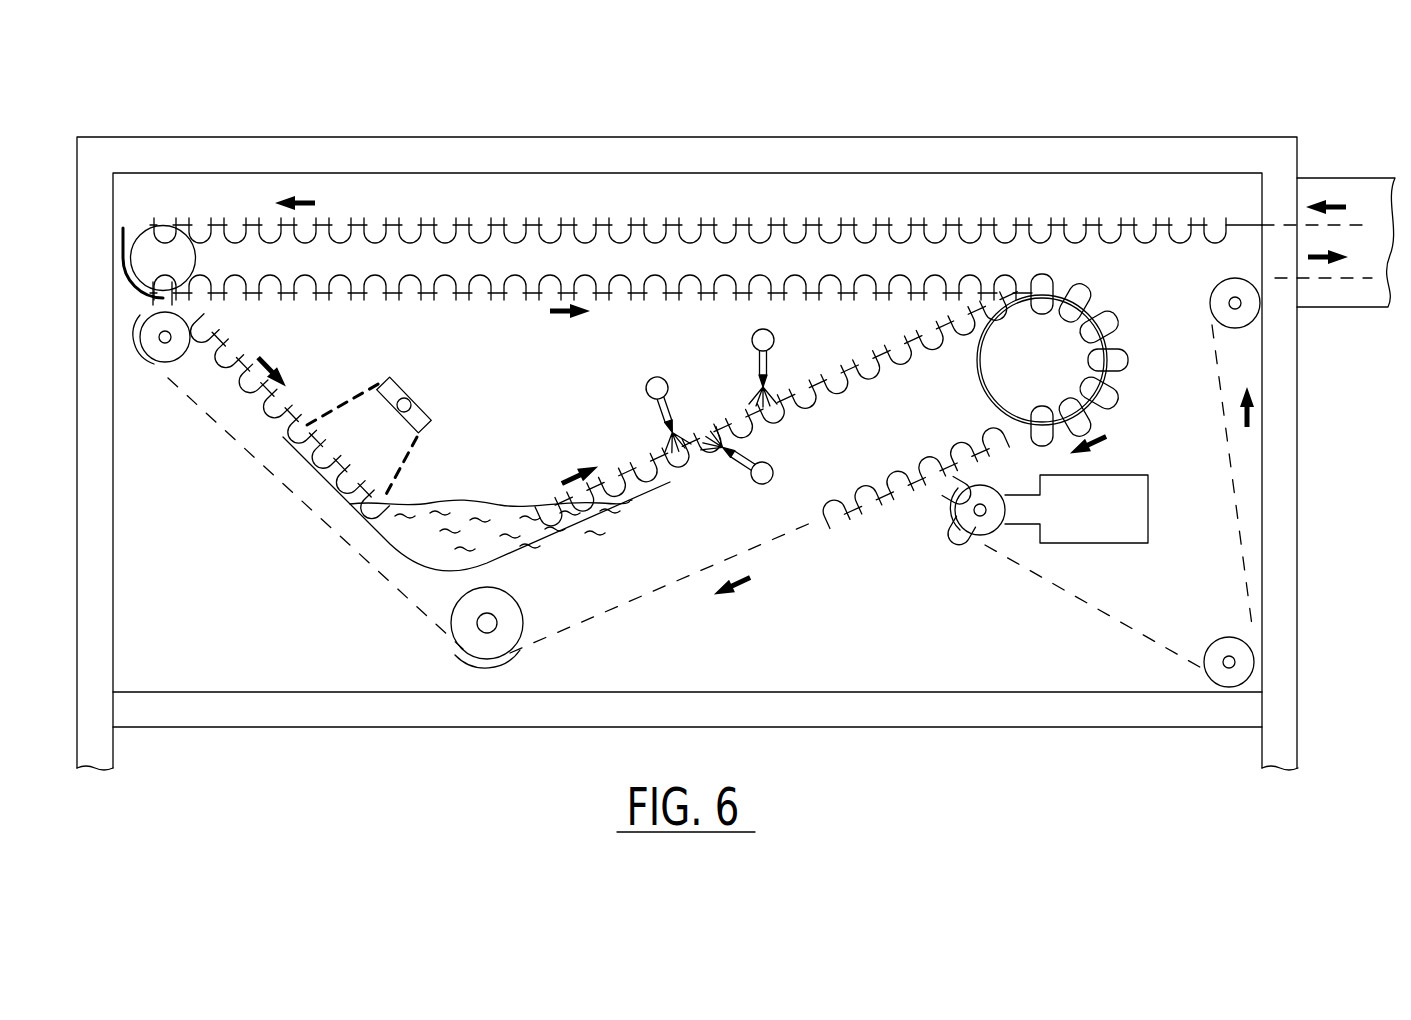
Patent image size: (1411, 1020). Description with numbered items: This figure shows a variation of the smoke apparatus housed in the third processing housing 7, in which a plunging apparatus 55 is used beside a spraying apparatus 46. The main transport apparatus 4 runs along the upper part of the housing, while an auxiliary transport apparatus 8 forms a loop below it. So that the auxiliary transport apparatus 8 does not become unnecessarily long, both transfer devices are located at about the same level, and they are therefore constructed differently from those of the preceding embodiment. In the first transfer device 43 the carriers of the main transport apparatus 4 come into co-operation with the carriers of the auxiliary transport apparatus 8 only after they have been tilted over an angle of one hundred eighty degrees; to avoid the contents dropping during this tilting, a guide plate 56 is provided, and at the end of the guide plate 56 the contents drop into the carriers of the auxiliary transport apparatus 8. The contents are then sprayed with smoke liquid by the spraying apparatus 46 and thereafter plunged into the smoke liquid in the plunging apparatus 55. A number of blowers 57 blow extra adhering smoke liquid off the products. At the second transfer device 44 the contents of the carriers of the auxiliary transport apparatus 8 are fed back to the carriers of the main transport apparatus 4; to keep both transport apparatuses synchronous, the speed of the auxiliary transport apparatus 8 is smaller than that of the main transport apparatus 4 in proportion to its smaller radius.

The first transfer device 43 is at (222, 120).
The third processing housing 7 is at (897, 113).
The main transport apparatus 4 is at (980, 227).
The guide plate 56 is at (123, 228).
The auxiliary transport apparatus 8 is at (903, 368).
The second transfer device 44 is at (1142, 390).
The plunging apparatus 55 is at (488, 552).
The spraying apparatus 46 is at (425, 424).
The blowers 57 is at (740, 347).